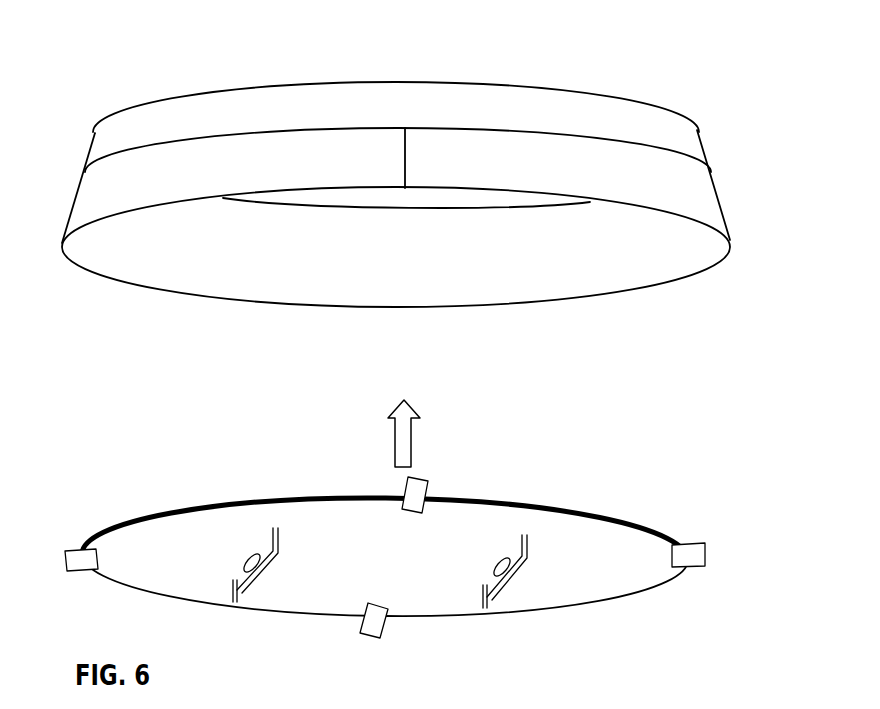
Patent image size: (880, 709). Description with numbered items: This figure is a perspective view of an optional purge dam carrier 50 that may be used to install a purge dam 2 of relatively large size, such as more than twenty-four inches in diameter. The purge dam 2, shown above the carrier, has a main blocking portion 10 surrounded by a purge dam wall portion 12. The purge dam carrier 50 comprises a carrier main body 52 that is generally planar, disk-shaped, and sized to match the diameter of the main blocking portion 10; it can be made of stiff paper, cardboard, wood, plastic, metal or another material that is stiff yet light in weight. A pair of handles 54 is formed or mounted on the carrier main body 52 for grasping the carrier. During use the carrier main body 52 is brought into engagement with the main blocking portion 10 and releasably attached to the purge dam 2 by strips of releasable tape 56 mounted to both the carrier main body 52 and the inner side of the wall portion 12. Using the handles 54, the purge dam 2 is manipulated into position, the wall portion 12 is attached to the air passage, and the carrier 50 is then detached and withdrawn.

The purge dam 2 is at (150, 57).
The main blocking portion 10 is at (598, 97).
The purge dam wall portion 12 is at (752, 108).
The purge dam carrier 50 is at (189, 479).
The carrier main body 52 is at (585, 508).
The handles 54 is at (240, 594).
The strips of releasable tape 56 is at (426, 486).